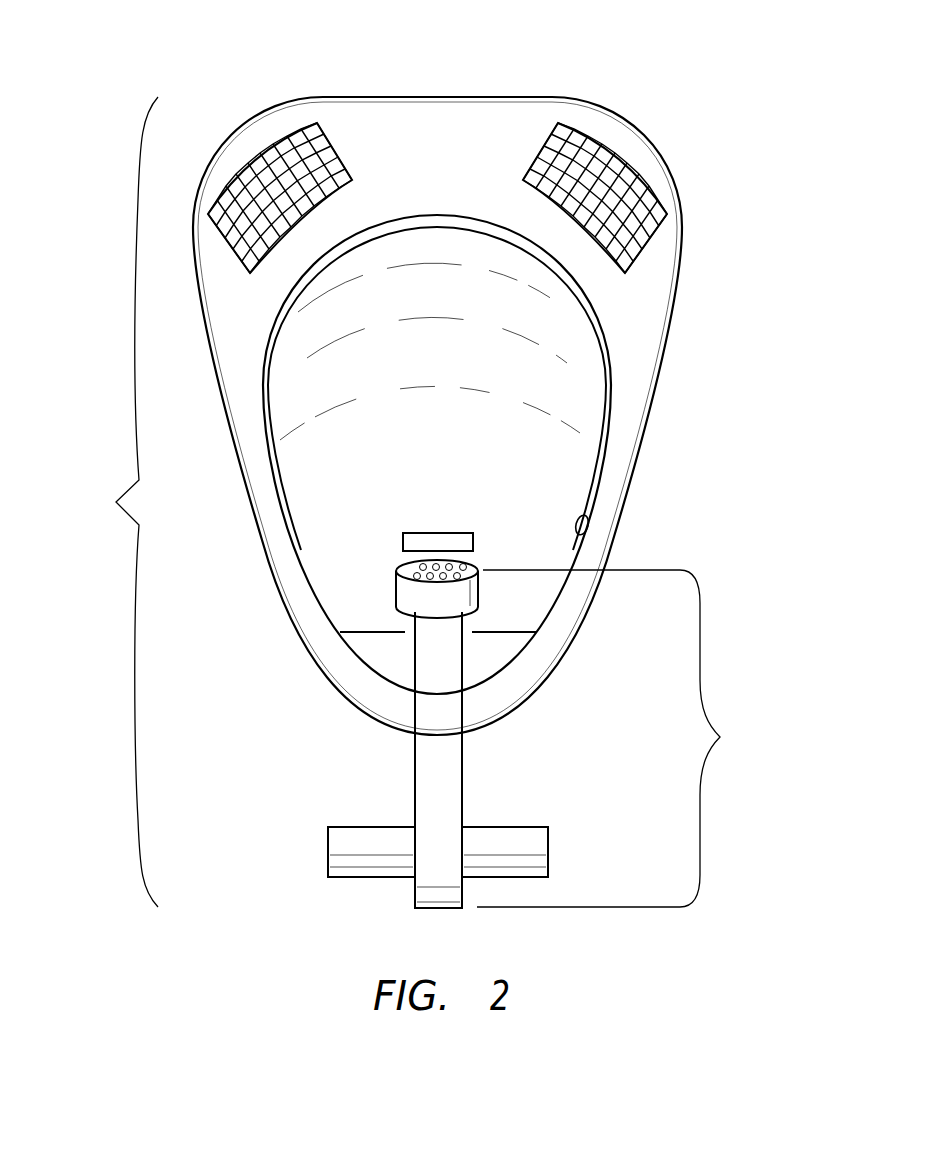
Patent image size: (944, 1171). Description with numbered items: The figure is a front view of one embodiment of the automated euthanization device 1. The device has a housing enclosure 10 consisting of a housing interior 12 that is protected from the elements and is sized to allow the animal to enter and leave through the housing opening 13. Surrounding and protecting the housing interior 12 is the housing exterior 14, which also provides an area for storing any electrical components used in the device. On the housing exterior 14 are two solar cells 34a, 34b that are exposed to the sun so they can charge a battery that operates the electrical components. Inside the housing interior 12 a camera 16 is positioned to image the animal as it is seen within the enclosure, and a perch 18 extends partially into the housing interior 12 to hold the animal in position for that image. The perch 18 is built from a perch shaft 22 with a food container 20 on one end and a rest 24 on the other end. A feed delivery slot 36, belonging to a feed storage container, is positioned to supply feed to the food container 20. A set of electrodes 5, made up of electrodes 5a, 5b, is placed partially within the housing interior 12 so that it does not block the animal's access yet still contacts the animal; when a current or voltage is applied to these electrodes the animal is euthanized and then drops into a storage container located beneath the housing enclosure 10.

The automated euthanization device 1 is at (727, 48).
The set of electrodes 5 is at (685, 228).
The electrode 5a is at (512, 633).
The electrode 5b is at (363, 633).
The housing enclosure 10 is at (120, 502).
The housing interior 12 is at (572, 283).
The housing opening 13 is at (560, 366).
The housing exterior 14 is at (421, 115).
The camera 16 is at (592, 523).
The perch 18 is at (617, 738).
The food container 20 is at (397, 587).
The perch shaft 22 is at (415, 783).
The rest 24 is at (328, 855).
The solar cell 34a is at (265, 148).
The solar cell 34b is at (647, 178).
The feed delivery slot 36 is at (403, 543).